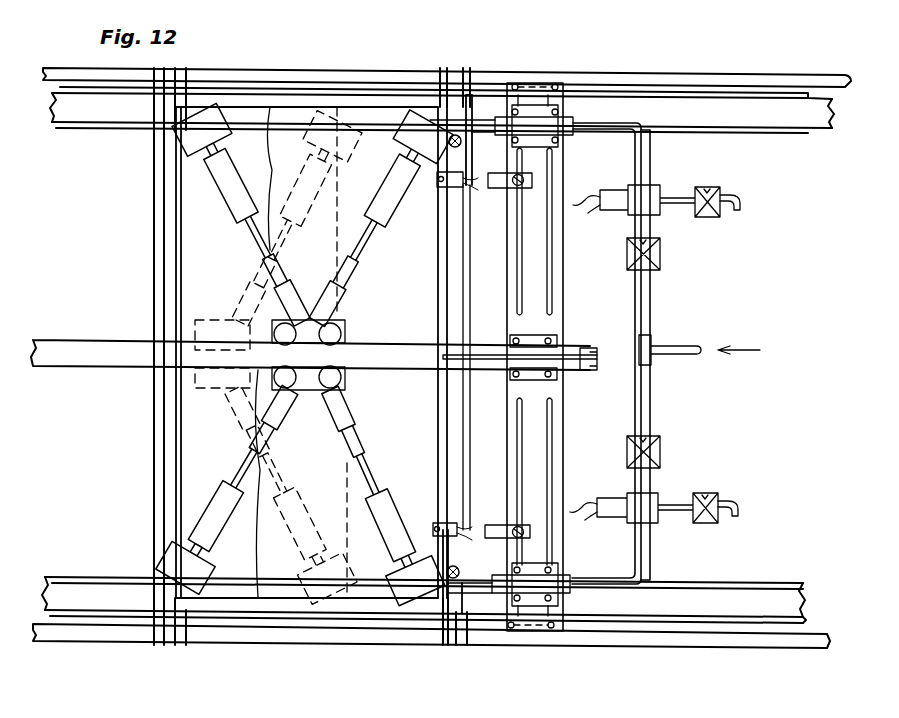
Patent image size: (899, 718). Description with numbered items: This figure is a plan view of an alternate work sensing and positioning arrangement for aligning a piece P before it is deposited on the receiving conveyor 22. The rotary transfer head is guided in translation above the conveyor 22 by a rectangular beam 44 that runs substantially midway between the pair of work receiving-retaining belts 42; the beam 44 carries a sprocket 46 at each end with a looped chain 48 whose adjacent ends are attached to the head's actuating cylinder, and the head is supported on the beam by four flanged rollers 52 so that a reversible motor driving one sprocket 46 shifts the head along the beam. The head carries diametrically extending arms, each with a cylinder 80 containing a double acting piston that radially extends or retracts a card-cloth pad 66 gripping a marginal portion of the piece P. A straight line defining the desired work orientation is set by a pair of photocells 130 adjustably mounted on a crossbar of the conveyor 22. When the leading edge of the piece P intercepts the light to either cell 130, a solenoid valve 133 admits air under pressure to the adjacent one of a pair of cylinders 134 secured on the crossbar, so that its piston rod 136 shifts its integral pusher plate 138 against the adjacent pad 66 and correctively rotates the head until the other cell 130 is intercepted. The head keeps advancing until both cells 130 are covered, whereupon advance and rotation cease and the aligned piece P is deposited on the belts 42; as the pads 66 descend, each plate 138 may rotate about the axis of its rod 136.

The conveyor 22 is at (647, 661).
The work receiving-retaining belts 42 is at (821, 134).
The beam 44 is at (82, 340).
The sprocket 46 is at (592, 363).
The looped chain 48 is at (481, 355).
The flanged rollers 52 is at (338, 373).
The work-engageable pads 66 is at (220, 112).
The cylinder 80 is at (390, 184).
The piece P is at (438, 271).
The photocells 130 is at (452, 190).
The solenoid valve 133 is at (616, 215).
The cylinders 134 is at (575, 135).
The piston rod 136 is at (473, 133).
The pusher plate 138 is at (473, 103).